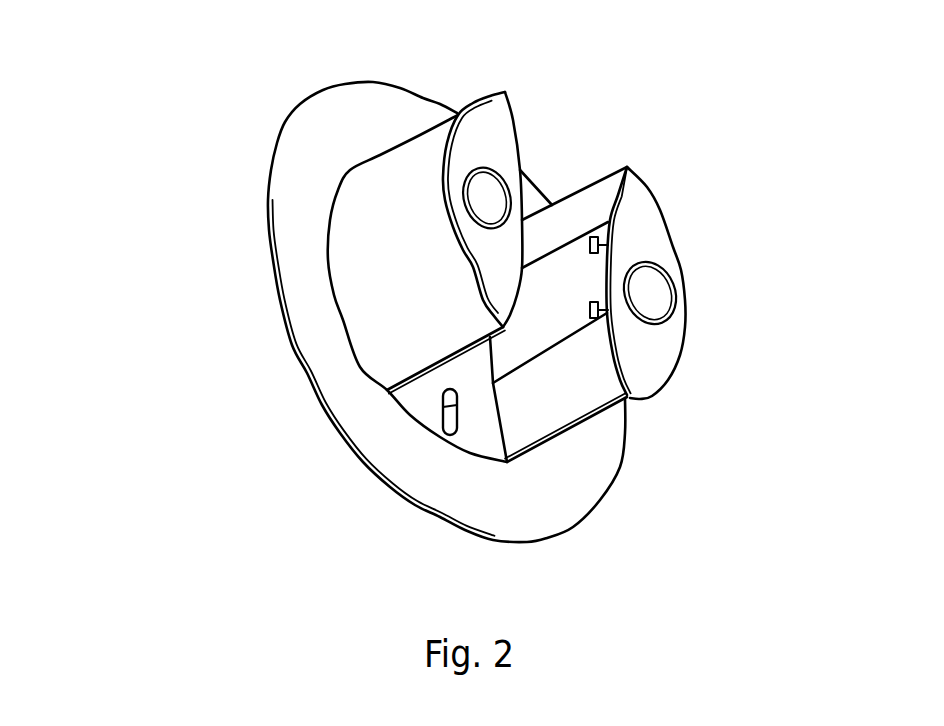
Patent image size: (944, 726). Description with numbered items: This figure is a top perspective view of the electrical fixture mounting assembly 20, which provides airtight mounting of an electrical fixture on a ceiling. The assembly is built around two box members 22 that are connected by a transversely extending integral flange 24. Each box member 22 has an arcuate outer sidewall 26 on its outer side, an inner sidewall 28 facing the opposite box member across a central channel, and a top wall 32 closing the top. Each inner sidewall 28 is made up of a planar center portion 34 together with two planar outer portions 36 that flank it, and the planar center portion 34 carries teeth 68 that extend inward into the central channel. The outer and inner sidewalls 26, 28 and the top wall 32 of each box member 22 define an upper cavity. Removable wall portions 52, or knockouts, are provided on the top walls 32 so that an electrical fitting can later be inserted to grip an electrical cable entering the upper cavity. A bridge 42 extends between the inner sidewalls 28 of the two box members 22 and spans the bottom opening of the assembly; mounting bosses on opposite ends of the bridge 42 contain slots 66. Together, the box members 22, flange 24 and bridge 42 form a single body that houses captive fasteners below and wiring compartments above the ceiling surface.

The electrical fixture mounting assembly 20 is at (233, 172).
The box member 22 is at (582, 209).
The integral flange 24 is at (315, 162).
The arcuate outer sidewall 26 is at (383, 238).
The inner sidewall 28 is at (608, 322).
The top wall 32 is at (564, 245).
The planar center portion 34 is at (541, 316).
The planar outer portion 36 is at (549, 234).
The bridge 42 is at (416, 456).
The removable wall portion 52 is at (475, 208).
The slot 66 is at (443, 417).
The teeth 68 is at (600, 240).